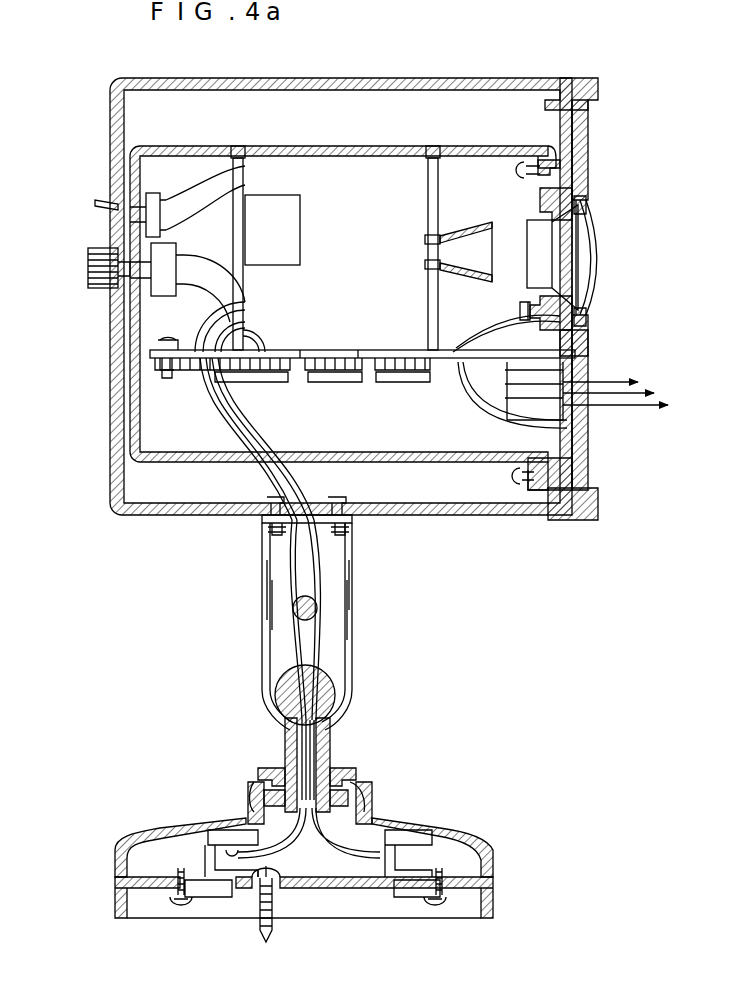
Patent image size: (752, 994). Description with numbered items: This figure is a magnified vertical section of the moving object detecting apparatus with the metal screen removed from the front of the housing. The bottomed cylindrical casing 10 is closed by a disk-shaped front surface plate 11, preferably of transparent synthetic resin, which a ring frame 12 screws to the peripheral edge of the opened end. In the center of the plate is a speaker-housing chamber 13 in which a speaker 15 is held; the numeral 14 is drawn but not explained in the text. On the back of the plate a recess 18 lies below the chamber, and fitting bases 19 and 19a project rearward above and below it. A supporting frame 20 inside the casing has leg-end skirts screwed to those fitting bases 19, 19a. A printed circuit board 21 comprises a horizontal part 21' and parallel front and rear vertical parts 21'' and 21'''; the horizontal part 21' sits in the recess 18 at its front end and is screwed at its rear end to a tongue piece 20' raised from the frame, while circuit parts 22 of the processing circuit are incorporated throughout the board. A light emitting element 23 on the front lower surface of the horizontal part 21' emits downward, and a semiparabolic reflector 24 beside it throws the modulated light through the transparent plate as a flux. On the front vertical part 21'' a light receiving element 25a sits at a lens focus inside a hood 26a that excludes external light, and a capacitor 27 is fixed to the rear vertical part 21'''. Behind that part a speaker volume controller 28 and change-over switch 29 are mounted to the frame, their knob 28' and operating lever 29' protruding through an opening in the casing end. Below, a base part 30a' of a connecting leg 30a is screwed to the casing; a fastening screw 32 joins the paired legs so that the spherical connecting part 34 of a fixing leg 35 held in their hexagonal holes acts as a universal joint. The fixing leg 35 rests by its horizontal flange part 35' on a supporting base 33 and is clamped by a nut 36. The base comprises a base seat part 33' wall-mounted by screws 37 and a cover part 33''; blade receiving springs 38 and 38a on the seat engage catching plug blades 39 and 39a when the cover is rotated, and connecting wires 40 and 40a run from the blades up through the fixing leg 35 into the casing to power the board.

The casing 10 is at (415, 80).
The front surface plate 11 is at (586, 162).
The ring frame 12 is at (586, 86).
The speaker-housing chamber 13 is at (590, 208).
The speaker mounting 14 is at (590, 320).
The speaker 15 is at (568, 266).
The recess 18 is at (592, 364).
The fitting base 19 is at (582, 128).
The fitting base 19a is at (560, 455).
The supporting frame 20 is at (343, 260).
The tongue piece 20' is at (168, 377).
The printed circuit board 21 is at (324, 333).
The horizontal part 21' is at (376, 333).
The front vertical part 21'' is at (409, 248).
The rear vertical part 21''' is at (274, 248).
The circuit parts 22 is at (402, 384).
The light emitting element 23 is at (560, 384).
The reflector 24 is at (518, 404).
The light receiving element 25a is at (472, 230).
The hood 26a is at (474, 278).
The capacitor 27 is at (300, 232).
The speaker volume controller 28 is at (154, 299).
The knob 28' is at (83, 279).
The change-over switch 29 is at (140, 211).
The operating lever 29' is at (77, 210).
The connecting leg 30a is at (282, 626).
The base part 30a' is at (351, 527).
The fastening screw 32 is at (316, 610).
The supporting base 33 is at (336, 829).
The base seat part 33' is at (339, 905).
The cover part 33'' is at (500, 815).
The spherical connecting part 34 is at (336, 706).
The fixing leg 35 is at (347, 765).
The horizontal flange part 35' is at (342, 770).
The nut 36 is at (350, 806).
The screw 37 is at (276, 920).
The blade receiving spring 38 is at (398, 906).
The blade receiving spring 38a is at (216, 906).
The catching plug blade 39 is at (410, 832).
The catching plug blade 39a is at (210, 840).
The connecting wire 40 is at (296, 642).
The connecting wire 40a is at (316, 644).